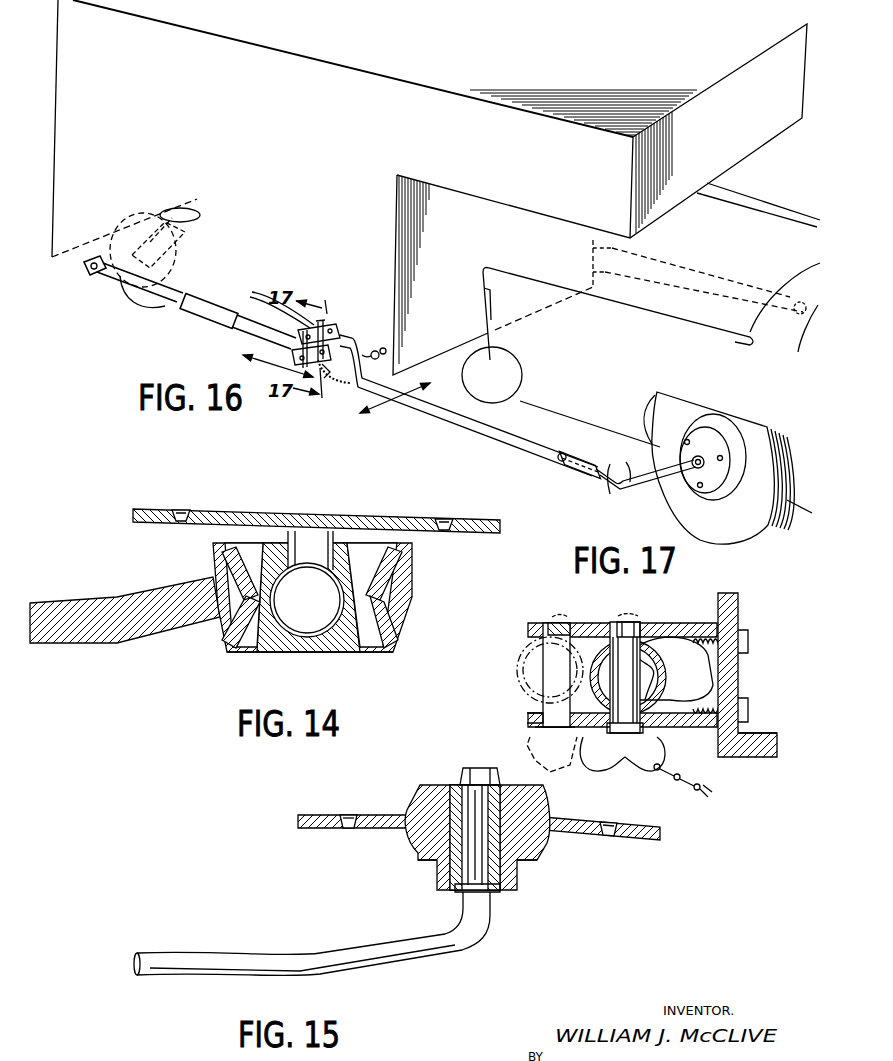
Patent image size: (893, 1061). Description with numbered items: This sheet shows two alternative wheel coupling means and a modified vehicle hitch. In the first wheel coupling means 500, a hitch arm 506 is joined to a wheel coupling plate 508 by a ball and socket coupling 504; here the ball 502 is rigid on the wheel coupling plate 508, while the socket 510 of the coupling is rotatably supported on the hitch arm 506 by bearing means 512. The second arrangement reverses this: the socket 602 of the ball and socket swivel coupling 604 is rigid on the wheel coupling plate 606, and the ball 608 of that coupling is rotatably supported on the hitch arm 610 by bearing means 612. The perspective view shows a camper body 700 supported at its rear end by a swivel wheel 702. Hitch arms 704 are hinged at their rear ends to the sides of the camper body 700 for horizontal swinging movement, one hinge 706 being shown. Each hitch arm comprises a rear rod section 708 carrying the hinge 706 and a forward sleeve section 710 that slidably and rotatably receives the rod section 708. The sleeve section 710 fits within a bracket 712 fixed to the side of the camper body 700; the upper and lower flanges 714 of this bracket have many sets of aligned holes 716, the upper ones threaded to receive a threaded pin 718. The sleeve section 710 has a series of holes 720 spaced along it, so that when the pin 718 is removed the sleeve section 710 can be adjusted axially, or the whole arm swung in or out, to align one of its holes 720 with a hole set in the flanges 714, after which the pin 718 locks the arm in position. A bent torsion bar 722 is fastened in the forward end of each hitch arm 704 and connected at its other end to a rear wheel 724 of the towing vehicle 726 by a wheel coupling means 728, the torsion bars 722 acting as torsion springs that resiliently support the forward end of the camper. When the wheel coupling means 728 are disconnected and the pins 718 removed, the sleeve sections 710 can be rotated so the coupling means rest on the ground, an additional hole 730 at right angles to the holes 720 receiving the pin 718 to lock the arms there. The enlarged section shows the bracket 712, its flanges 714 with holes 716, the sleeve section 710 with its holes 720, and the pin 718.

In FIG. 14, the wheel coupling means 500 is at (325, 611).
In FIG. 14, the ball 502 is at (322, 627).
In FIG. 14, the ball and socket coupling 504 is at (277, 653).
In FIG. 14, the hitch arm 506 is at (80, 643).
In FIG. 14, the wheel coupling plate 508 is at (307, 510).
In FIG. 14, the socket 510 is at (267, 632).
In FIG. 14, the bearing means 512 is at (238, 577).
In FIG. 15, the socket 602 is at (407, 797).
In FIG. 15, the ball and socket swivel coupling 604 is at (407, 855).
In FIG. 15, the wheel coupling plate 606 is at (310, 813).
In FIG. 15, the ball 608 is at (440, 782).
In FIG. 15, the hitch arm 610 is at (366, 941).
In FIG. 15, the bearing means 612 is at (517, 883).
In FIG. 17, the camper body 700 is at (738, 670).
In FIG. 16, the swivel wheel 702 is at (182, 247).
In FIG. 16, the hitch arm 704 is at (468, 436).
In FIG. 16, the hinge 706 is at (97, 277).
In FIG. 16, the rear rod section 708 is at (150, 293).
In FIG. 16, the forward sleeve section 710 is at (485, 445).
In FIG. 17, the forward sleeve section 710 is at (738, 695).
In FIG. 16, the bracket 712 is at (327, 324).
In FIG. 17, the bracket 712 is at (638, 622).
In FIG. 16, the bracket flanges 714 is at (297, 353).
In FIG. 17, the bracket flanges 714 is at (528, 632).
In FIG. 16, the aligned holes 716 is at (258, 294).
In FIG. 17, the aligned holes 716 is at (553, 623).
In FIG. 16, the threaded pin 718 is at (335, 347).
In FIG. 17, the threaded pin 718 is at (540, 672).
In FIG. 16, the holes 720 is at (232, 315).
In FIG. 17, the holes 720 is at (673, 665).
In FIG. 16, the bent torsion bar 722 is at (648, 450).
In FIG. 16, the rear wheel 724 is at (677, 407).
In FIG. 16, the towing vehicle 726 is at (614, 337).
In FIG. 16, the wheel coupling means 728 is at (726, 487).
In FIG. 16, the additional hole 730 is at (338, 380).